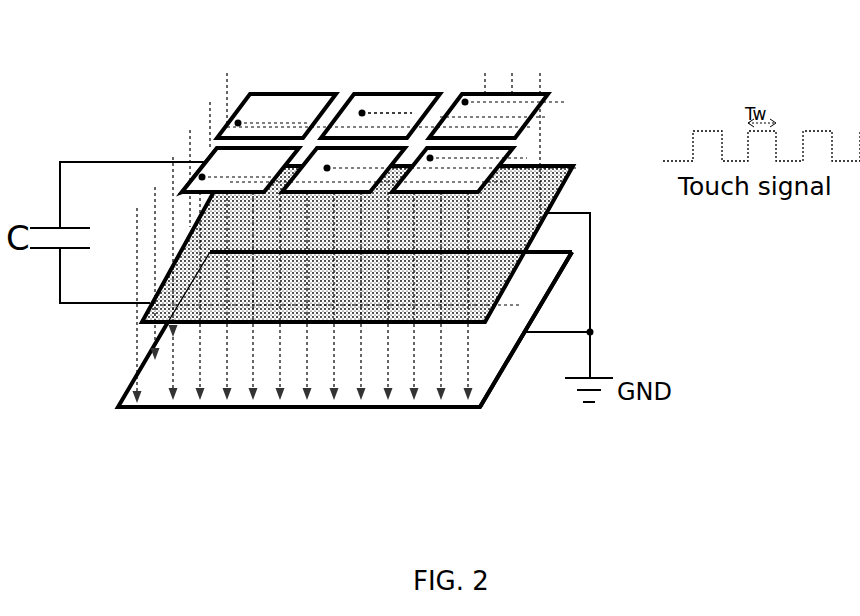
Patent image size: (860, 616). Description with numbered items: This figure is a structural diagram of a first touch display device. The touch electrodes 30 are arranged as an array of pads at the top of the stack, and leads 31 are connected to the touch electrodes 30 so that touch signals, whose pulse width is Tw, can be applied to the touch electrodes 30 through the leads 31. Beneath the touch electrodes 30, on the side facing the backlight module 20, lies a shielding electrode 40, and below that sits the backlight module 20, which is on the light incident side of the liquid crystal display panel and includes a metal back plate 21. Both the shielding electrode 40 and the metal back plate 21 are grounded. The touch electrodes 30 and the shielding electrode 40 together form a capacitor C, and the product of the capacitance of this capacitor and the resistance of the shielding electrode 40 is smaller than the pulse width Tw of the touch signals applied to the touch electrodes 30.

The backlight module 20 is at (308, 415).
The metal back plate 21 is at (512, 362).
The touch electrodes 30 is at (277, 93).
The leads 31 is at (396, 113).
The shielding electrode 40 is at (563, 183).